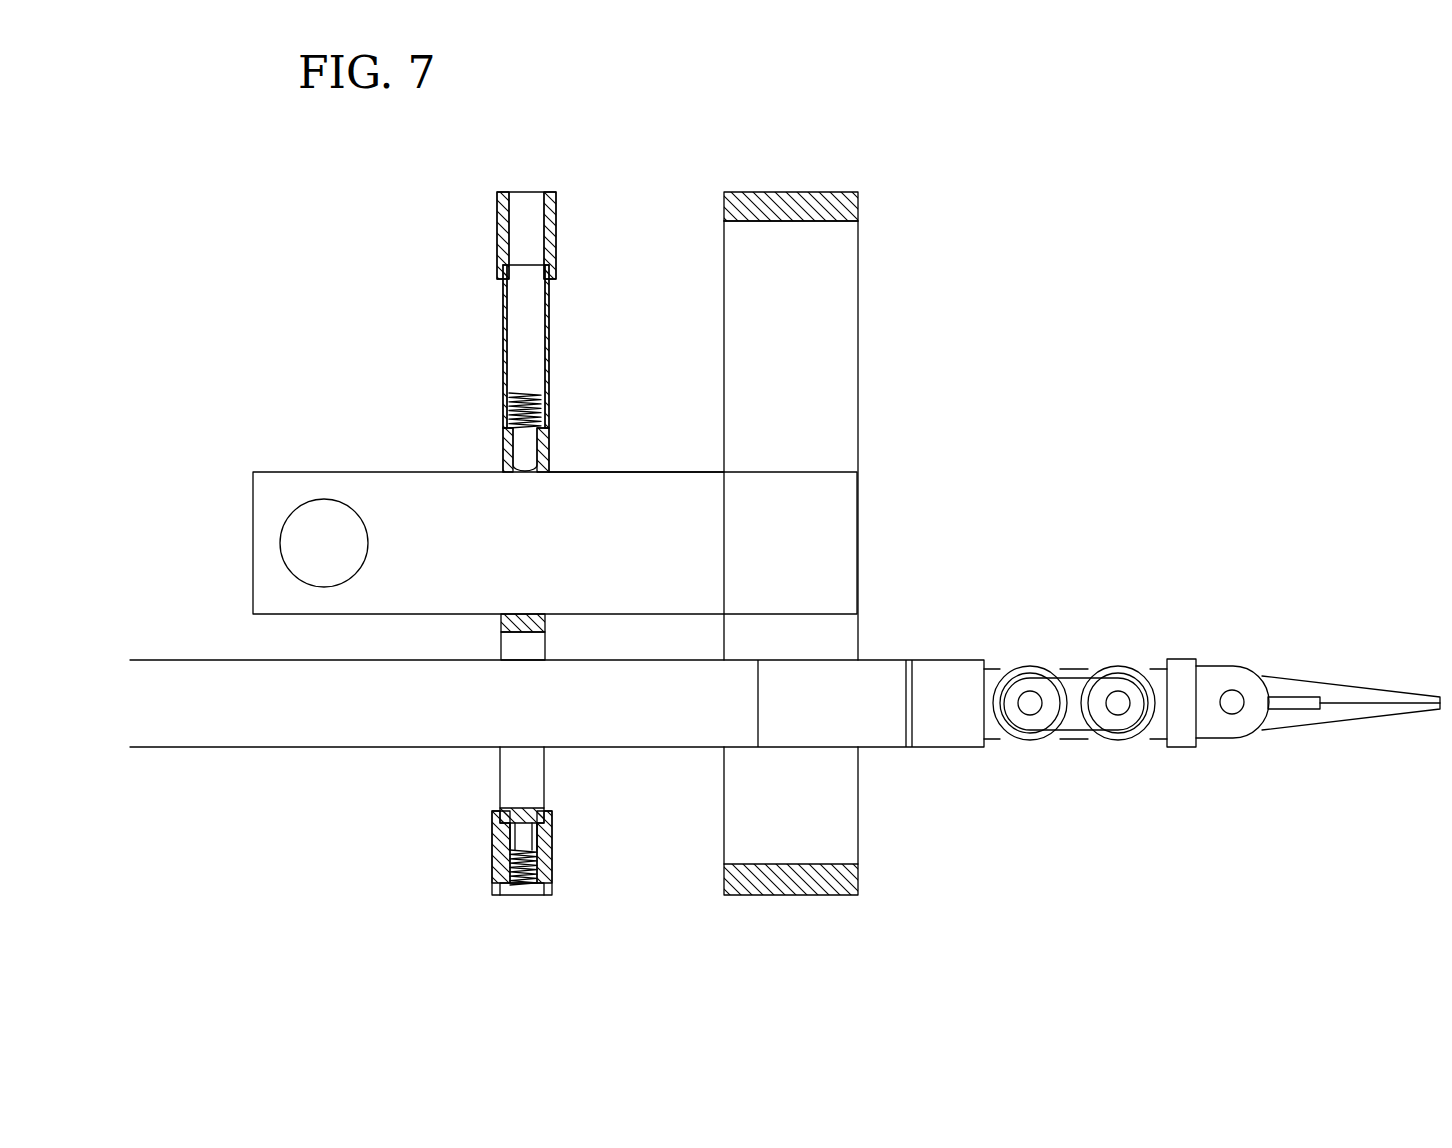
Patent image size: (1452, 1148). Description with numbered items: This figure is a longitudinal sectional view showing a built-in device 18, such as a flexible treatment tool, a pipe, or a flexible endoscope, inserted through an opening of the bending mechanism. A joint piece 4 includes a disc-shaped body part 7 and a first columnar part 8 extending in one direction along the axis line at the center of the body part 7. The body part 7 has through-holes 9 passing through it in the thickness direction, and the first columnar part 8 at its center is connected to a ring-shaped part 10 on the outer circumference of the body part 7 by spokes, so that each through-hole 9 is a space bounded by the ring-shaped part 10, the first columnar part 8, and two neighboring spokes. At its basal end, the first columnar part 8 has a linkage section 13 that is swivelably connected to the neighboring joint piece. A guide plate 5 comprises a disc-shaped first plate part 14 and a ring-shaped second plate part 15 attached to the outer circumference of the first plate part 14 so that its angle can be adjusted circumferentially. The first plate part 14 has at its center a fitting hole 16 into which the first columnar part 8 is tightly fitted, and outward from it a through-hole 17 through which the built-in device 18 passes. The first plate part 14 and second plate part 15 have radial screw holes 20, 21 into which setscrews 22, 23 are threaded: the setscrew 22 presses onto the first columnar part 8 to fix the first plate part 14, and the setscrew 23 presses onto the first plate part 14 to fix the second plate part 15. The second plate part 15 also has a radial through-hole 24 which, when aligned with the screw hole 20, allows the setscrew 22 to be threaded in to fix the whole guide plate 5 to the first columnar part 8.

The joint piece 4 is at (843, 498).
The guide plate 5 is at (572, 295).
The body part 7 is at (858, 348).
The first columnar part 8 is at (680, 472).
The through-hole 9 is at (795, 222).
The ring-shaped part 10 is at (790, 192).
The linkage section 13 is at (283, 440).
The first plate part 14 is at (550, 323).
The second plate part 15 is at (556, 225).
The fitting hole 16 is at (505, 473).
The through-hole 17 is at (523, 812).
The built-in device 18 is at (372, 748).
The screw hole 20 is at (536, 393).
The screw hole 21 is at (556, 879).
The setscrew 22 is at (530, 445).
The setscrew 23 is at (523, 836).
The through-hole 24 is at (508, 220).